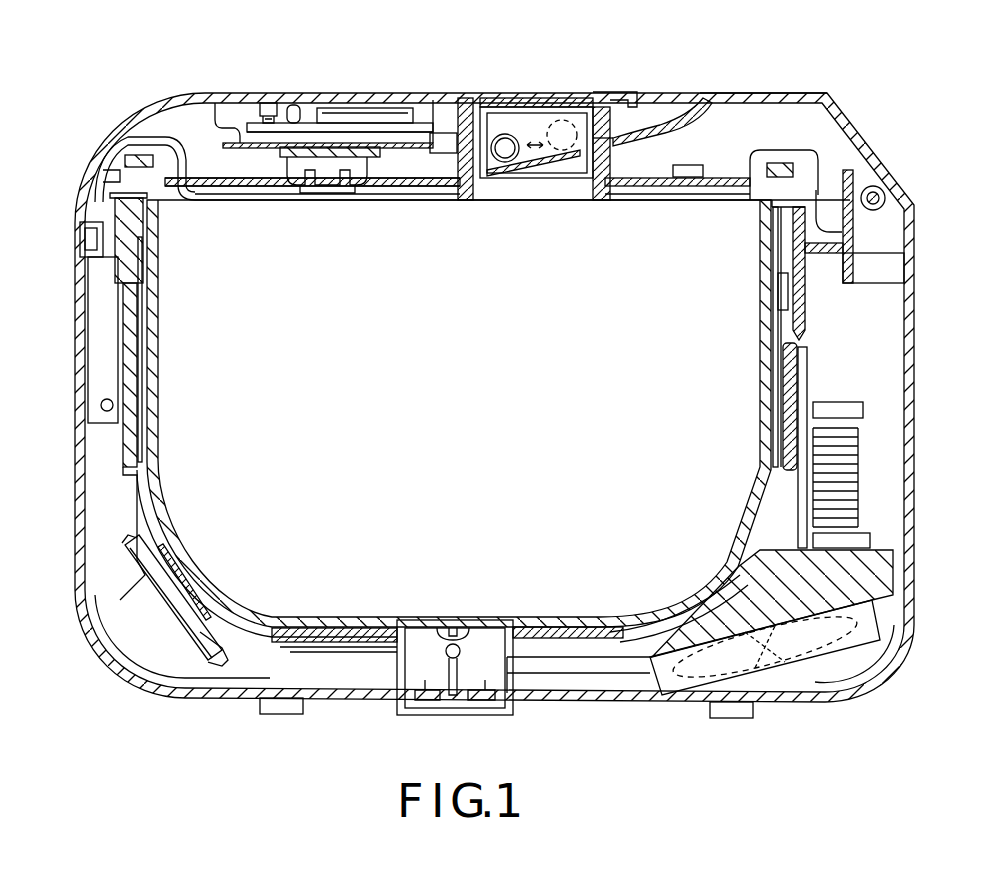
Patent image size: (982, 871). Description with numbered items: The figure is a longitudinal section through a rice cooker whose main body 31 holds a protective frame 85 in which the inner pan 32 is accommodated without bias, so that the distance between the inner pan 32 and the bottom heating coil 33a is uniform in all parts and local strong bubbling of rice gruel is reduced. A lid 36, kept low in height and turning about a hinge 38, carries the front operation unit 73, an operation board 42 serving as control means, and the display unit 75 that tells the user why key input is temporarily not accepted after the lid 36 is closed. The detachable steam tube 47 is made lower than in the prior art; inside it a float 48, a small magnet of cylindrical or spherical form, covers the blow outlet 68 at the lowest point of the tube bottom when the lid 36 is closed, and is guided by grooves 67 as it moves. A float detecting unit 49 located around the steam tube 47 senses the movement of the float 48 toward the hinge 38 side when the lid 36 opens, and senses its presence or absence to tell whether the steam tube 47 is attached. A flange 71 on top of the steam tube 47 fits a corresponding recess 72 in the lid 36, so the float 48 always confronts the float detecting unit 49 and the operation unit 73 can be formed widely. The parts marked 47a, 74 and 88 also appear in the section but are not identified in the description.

The main body 31 is at (75, 517).
The inner pan 32 is at (158, 288).
The bottom heating coil 33a is at (303, 650).
The lid 36 is at (772, 93).
The hinge 38 is at (848, 167).
The operation board 42 is at (345, 130).
The steam tube 47 is at (562, 110).
The partition wall 47a is at (568, 167).
The float 48 is at (507, 153).
The float detecting unit 49 is at (445, 133).
The grooves 67 is at (540, 160).
The blow outlet 68 is at (498, 163).
The flange 71 is at (622, 92).
The recess 72 is at (663, 120).
The front operation unit 73 is at (265, 92).
The cover plate 74 is at (510, 97).
The display unit 75 is at (372, 88).
The protective frame 85 is at (143, 472).
The heat sink 88 is at (860, 463).